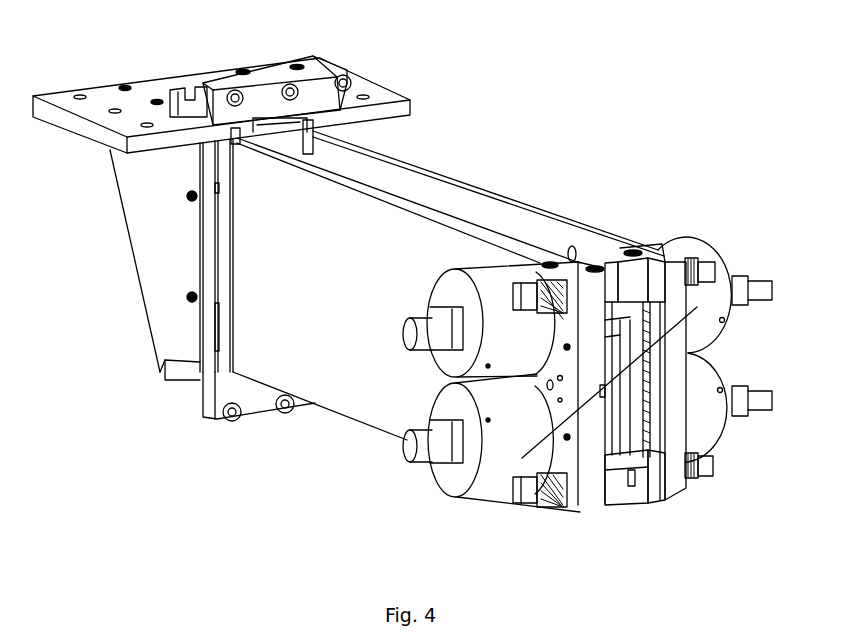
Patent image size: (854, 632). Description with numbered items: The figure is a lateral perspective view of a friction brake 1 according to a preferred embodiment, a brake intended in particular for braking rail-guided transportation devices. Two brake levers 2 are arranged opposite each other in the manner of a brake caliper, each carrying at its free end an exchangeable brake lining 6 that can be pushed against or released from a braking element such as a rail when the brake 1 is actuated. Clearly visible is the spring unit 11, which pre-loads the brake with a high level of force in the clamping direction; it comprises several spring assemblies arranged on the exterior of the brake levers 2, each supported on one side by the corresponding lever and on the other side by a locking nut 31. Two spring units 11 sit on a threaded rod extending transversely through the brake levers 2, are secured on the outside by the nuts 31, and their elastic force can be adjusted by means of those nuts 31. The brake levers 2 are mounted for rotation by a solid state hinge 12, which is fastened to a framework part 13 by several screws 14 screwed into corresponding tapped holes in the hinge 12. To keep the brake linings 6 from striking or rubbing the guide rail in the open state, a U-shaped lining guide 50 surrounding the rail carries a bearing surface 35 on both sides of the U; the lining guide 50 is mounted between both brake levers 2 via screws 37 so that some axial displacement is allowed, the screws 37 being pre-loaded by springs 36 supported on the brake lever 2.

The friction brake 1 is at (566, 152).
The brake levers 2 is at (512, 200).
The brake lining 6 is at (630, 427).
The spring unit 11 is at (462, 360).
The solid state hinge 12 is at (262, 410).
The framework part 13 is at (156, 232).
The screws 14 is at (277, 77).
The locking nut 31 is at (437, 353).
The bearing surface 35 is at (604, 262).
The springs 36 is at (548, 504).
The screws 37 is at (519, 503).
The U-shaped lining guide 50 is at (668, 246).